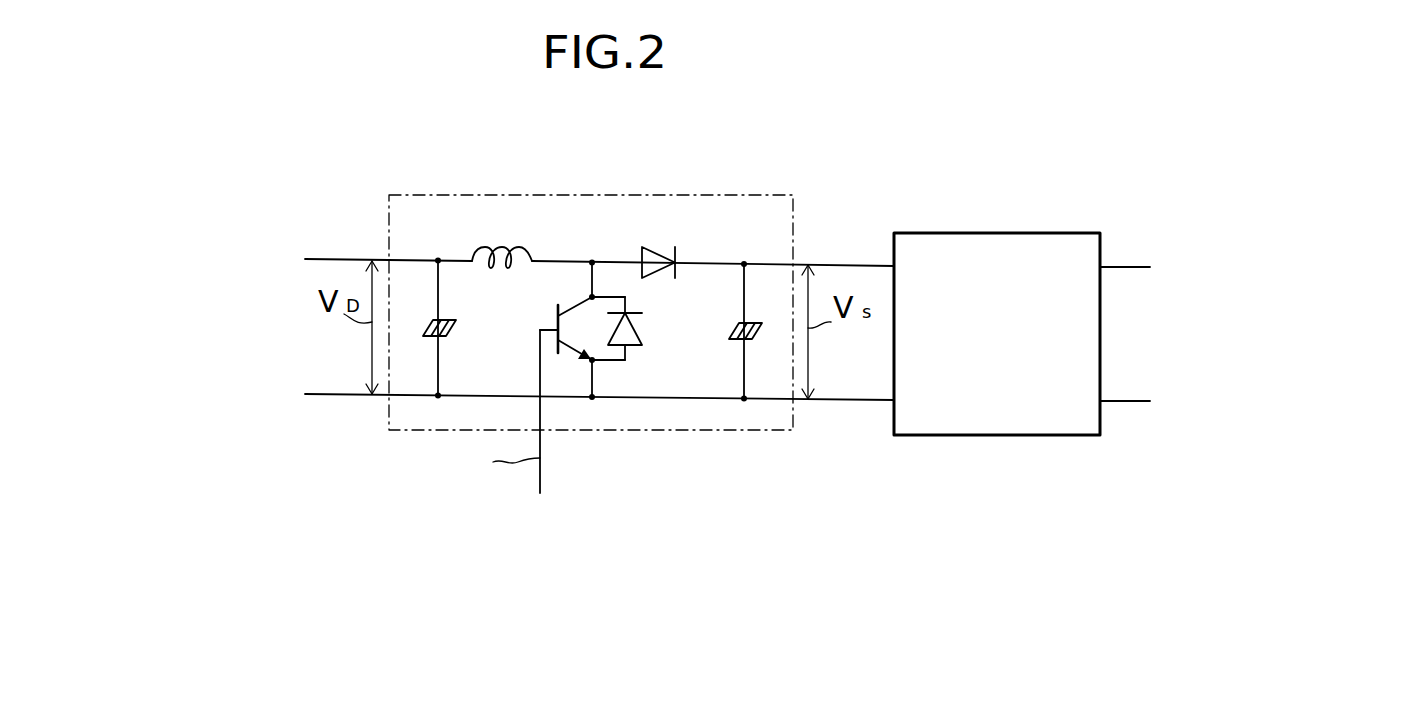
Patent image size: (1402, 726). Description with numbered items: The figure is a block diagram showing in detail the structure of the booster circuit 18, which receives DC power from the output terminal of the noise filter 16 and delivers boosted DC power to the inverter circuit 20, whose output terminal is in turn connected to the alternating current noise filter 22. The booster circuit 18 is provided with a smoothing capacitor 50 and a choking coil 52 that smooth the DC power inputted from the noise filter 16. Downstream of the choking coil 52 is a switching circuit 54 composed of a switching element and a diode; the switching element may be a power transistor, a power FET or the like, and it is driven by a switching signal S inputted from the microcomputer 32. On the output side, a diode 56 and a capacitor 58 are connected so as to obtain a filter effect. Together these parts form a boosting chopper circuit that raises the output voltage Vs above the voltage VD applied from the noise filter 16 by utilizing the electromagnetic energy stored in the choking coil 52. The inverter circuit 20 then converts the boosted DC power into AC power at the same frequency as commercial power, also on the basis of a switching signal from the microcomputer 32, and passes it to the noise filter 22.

The noise filter 16 is at (177, 270).
The booster circuit 18 is at (728, 195).
The inverter circuit 20 is at (993, 233).
The alternating current noise filter 22 is at (1280, 325).
The microcomputer 32 is at (568, 449).
The smoothing capacitor 50 is at (448, 320).
The choking coil 52 is at (523, 246).
The switching circuit 54 is at (622, 371).
The diode 56 is at (656, 248).
The capacitor 58 is at (742, 325).